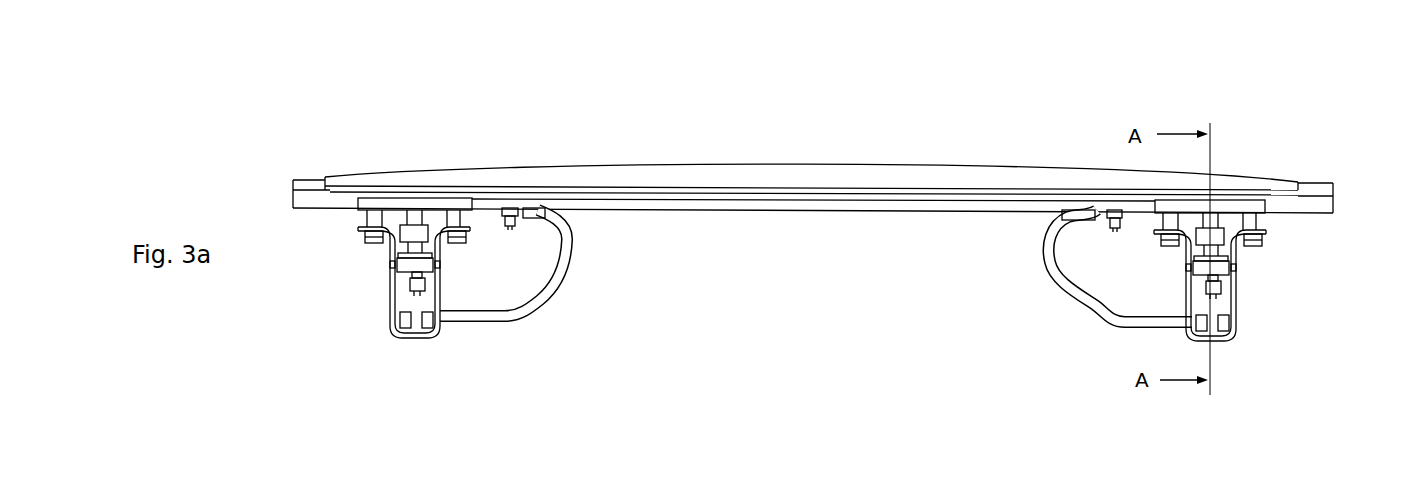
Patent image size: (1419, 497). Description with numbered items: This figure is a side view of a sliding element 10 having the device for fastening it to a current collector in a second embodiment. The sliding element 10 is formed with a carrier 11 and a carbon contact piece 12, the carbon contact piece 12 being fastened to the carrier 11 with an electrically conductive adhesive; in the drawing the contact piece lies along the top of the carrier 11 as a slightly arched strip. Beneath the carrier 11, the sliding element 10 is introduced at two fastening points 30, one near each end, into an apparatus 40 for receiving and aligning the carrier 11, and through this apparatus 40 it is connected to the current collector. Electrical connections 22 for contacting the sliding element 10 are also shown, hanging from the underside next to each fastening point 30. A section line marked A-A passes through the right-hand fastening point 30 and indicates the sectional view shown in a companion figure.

The sliding element 10 is at (685, 153).
The carrier 11 is at (762, 200).
The carbon contact piece 12 is at (797, 177).
The electrical connections 22 is at (558, 295).
The fastening points 30 is at (355, 278).
The apparatus for receiving and aligning the carrier 40 is at (455, 202).